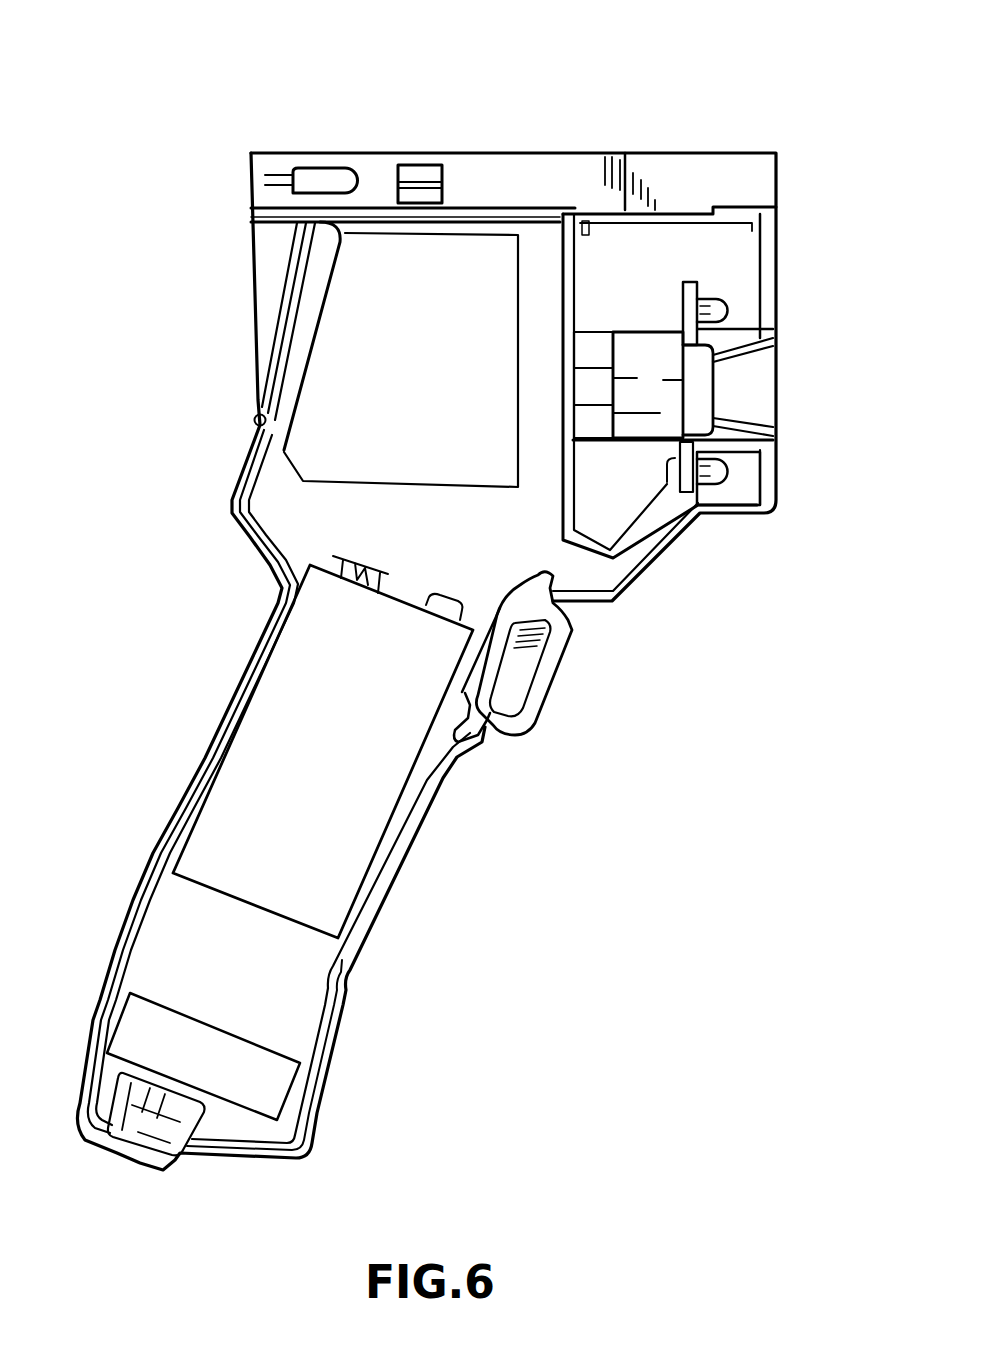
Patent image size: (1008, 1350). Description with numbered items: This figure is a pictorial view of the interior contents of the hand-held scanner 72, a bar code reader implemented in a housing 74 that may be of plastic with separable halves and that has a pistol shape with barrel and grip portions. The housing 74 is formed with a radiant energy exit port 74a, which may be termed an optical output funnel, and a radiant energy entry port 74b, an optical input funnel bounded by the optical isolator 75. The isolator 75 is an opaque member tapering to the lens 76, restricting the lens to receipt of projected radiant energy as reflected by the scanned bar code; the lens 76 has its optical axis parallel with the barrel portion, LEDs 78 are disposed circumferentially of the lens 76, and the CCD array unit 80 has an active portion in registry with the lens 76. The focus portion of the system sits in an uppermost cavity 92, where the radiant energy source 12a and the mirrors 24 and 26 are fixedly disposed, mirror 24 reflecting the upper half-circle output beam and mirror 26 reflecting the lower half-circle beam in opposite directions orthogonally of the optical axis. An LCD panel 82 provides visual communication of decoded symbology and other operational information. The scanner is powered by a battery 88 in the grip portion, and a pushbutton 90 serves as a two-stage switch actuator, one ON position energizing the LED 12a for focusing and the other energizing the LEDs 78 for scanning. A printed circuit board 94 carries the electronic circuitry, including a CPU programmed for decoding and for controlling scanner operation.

The hand-held scanner 72 is at (474, 72).
The radiant energy source 12a is at (289, 160).
The mirror 24 is at (418, 158).
The mirror 26 is at (420, 200).
The CCD array unit 80 is at (567, 240).
The uppermost cavity 92 is at (703, 172).
The LCD panel 82 is at (275, 311).
The radiant energy entry port 74b is at (786, 396).
The LEDs 78 is at (708, 305).
The lens 76 is at (667, 380).
The optical isolator 75 is at (757, 378).
The radiant energy exit port 74a is at (770, 465).
The printed circuit board 94 is at (436, 403).
The battery 88 is at (253, 743).
The pushbutton 90 is at (537, 693).
The housing 74 is at (434, 797).